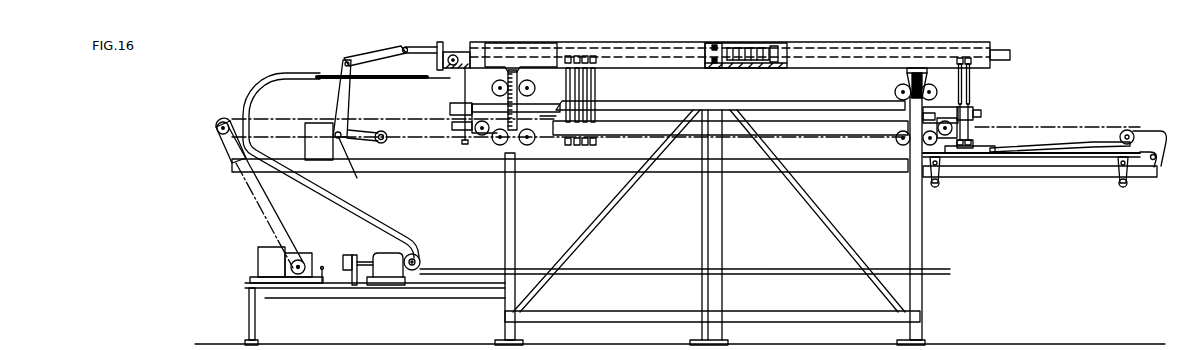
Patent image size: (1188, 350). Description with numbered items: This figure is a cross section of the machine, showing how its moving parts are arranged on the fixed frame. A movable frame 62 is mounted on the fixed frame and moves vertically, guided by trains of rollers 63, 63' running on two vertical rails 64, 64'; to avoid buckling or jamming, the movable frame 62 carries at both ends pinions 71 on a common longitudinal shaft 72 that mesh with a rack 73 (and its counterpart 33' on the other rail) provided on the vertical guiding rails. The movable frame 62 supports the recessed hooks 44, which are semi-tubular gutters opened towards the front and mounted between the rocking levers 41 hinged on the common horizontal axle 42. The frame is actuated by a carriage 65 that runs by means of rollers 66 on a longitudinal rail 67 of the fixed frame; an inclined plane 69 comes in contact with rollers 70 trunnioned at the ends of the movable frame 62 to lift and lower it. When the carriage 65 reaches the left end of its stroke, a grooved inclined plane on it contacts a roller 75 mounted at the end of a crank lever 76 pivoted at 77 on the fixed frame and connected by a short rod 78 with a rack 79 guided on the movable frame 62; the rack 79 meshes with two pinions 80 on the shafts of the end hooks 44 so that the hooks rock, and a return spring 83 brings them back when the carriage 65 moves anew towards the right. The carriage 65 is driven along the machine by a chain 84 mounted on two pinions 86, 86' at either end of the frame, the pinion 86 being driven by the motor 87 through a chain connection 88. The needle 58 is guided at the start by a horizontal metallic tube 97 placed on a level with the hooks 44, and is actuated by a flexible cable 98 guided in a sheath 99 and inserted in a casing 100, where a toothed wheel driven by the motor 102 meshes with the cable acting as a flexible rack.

The rack 33' is at (927, 61).
The levers 41 is at (595, 90).
The horizontal axle 42 is at (714, 250).
The recessed hooks 44 is at (597, 57).
The needle 58 is at (437, 82).
The movable frame 62 is at (461, 50).
The rollers 63 is at (550, 82).
The rollers 63' is at (951, 85).
The vertical rail 64 is at (517, 82).
The vertical rail 64' is at (900, 85).
The carriage 65 is at (1075, 165).
The rollers 66 is at (940, 184).
The longitudinal rail 67 is at (1030, 172).
The inclined plane 69 is at (1100, 141).
The rollers 70 is at (965, 120).
The pinions 71 is at (545, 112).
The longitudinal shaft 72 is at (548, 110).
The rack 73 is at (512, 70).
The roller 75 is at (387, 139).
The crank lever 76 is at (339, 95).
The pivot 77 is at (352, 166).
The short rod 78 is at (376, 55).
The rack 79 is at (483, 60).
The pinions 80 is at (445, 40).
The return spring 83 is at (738, 48).
The chain 84 is at (1060, 128).
The pinion 86 is at (202, 132).
The pinion 86' is at (1143, 133).
The motor 87 is at (290, 268).
The chain connection 88 is at (247, 190).
The horizontal metallic tube 97 is at (400, 80).
The flexible cable 98 is at (657, 272).
The sheath 99 is at (348, 201).
The casing 100 is at (421, 258).
The motor 102 is at (385, 280).